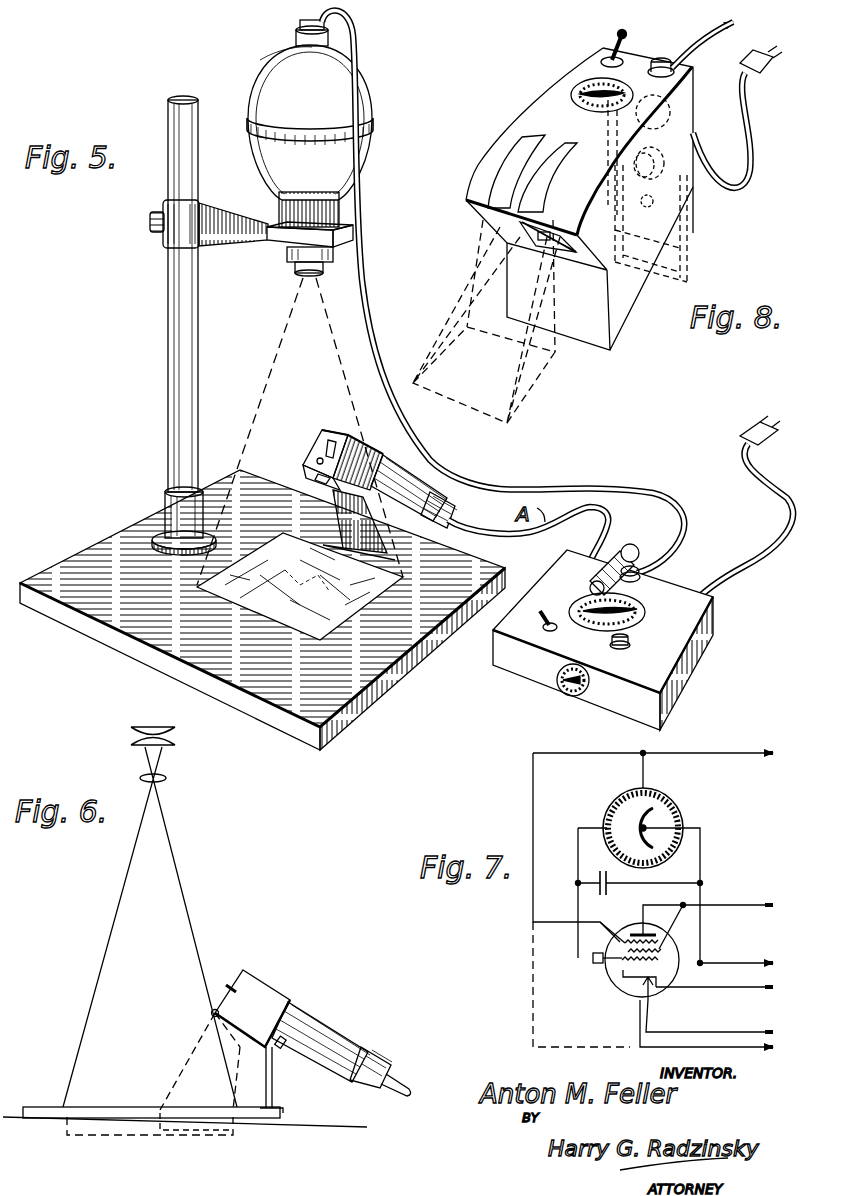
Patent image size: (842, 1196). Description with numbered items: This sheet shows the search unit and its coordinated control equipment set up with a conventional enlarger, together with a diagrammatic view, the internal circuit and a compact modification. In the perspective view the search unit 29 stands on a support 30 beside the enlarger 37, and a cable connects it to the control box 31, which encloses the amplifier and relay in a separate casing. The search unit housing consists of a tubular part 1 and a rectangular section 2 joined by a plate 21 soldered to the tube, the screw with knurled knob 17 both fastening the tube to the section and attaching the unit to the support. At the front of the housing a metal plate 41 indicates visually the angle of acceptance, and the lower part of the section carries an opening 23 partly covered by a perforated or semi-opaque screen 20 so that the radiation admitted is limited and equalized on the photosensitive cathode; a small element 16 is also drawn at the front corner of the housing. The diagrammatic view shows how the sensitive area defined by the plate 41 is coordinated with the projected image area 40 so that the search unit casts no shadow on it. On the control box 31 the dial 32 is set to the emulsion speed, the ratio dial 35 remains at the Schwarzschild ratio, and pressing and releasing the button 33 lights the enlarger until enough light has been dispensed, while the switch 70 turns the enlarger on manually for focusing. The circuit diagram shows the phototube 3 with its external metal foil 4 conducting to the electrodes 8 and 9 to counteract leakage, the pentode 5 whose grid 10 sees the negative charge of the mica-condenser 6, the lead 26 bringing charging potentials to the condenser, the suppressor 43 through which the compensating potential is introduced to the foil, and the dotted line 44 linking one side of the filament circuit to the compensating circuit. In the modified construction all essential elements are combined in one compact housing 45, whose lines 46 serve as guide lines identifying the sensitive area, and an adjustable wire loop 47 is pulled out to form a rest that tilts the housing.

In FIG. 5, the tubular part 1 is at (411, 472).
In FIG. 6, the tubular part 1 is at (337, 1033).
In FIG. 5, the rectangular section 2 is at (363, 447).
In FIG. 6, the rectangular section 2 is at (270, 978).
In FIG. 7, the phototube 3 is at (645, 818).
In FIG. 7, the metal foil 4 is at (667, 790).
In FIG. 7, the pentode 5 is at (608, 978).
In FIG. 7, the mica-condenser 6 is at (608, 890).
In FIG. 7, the photosensitive cathode 8 is at (620, 815).
In FIG. 7, the electrode 9 is at (644, 828).
In FIG. 7, the grid 10 is at (598, 967).
In FIG. 5, the light aperture 16 is at (318, 459).
In FIG. 6, the light aperture 16 is at (211, 1012).
In FIG. 6, the knurled knob 17 is at (283, 1048).
In FIG. 8, the perforated or semi-opaque screen 20 is at (556, 212).
In FIG. 6, the plate 21 is at (270, 1032).
In FIG. 5, the opening or window 23 is at (316, 479).
In FIG. 8, the opening or window 23 is at (537, 240).
In FIG. 7, the lead 26 is at (730, 967).
In FIG. 5, the search unit 29 is at (340, 429).
In FIG. 5, the support 30 is at (377, 520).
In FIG. 6, the support 30 is at (274, 1093).
In FIG. 5, the control box 31 is at (492, 662).
In FIG. 5, the dial 32 is at (640, 610).
In FIG. 8, the dial 32 is at (587, 88).
In FIG. 5, the button 33 is at (631, 641).
In FIG. 8, the button 33 is at (663, 57).
In FIG. 5, the ratio dial 35 is at (557, 680).
In FIG. 5, the enlarger 37 is at (262, 92).
In FIG. 5, the print / exposure area 40 is at (262, 585).
In FIG. 8, the print / exposure area 40 is at (462, 397).
In FIG. 6, the print / exposure area 40 is at (192, 1127).
In FIG. 5, the metal plate 41 is at (327, 445).
In FIG. 6, the metal plate 41 is at (233, 990).
In FIG. 7, the suppressor 43 is at (608, 922).
In FIG. 7, the dotted line 44 is at (530, 982).
In FIG. 8, the compact housing 45 is at (527, 110).
In FIG. 8, the lines 46 is at (510, 178).
In FIG. 8, the adjustable wire loop 47 is at (687, 248).
In FIG. 5, the switch 70 is at (537, 621).
In FIG. 8, the switch 70 is at (617, 40).